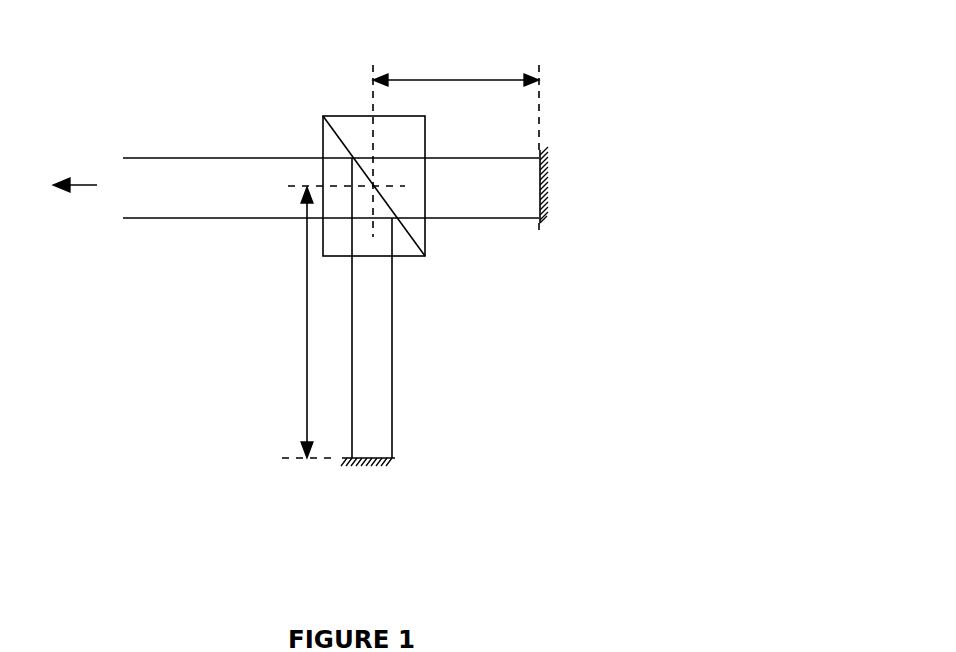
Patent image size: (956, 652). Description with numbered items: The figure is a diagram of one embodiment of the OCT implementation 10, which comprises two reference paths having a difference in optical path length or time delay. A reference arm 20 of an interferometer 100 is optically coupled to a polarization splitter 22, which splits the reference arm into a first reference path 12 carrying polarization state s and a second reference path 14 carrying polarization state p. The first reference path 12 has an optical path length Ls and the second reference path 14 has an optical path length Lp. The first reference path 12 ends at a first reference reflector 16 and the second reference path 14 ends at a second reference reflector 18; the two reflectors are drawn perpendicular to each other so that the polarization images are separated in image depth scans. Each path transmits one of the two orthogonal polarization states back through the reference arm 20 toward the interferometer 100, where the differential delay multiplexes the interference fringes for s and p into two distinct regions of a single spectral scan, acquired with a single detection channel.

The OCT implementation 10 is at (284, 33).
The reference arm 20 is at (188, 158).
The interferometer 100 is at (104, 202).
The polarization splitter 22 is at (478, 313).
The second reference path 14 is at (481, 172).
The second reference reflector 18 is at (538, 138).
The first reference path 12 is at (352, 349).
The first reference reflector 16 is at (395, 456).